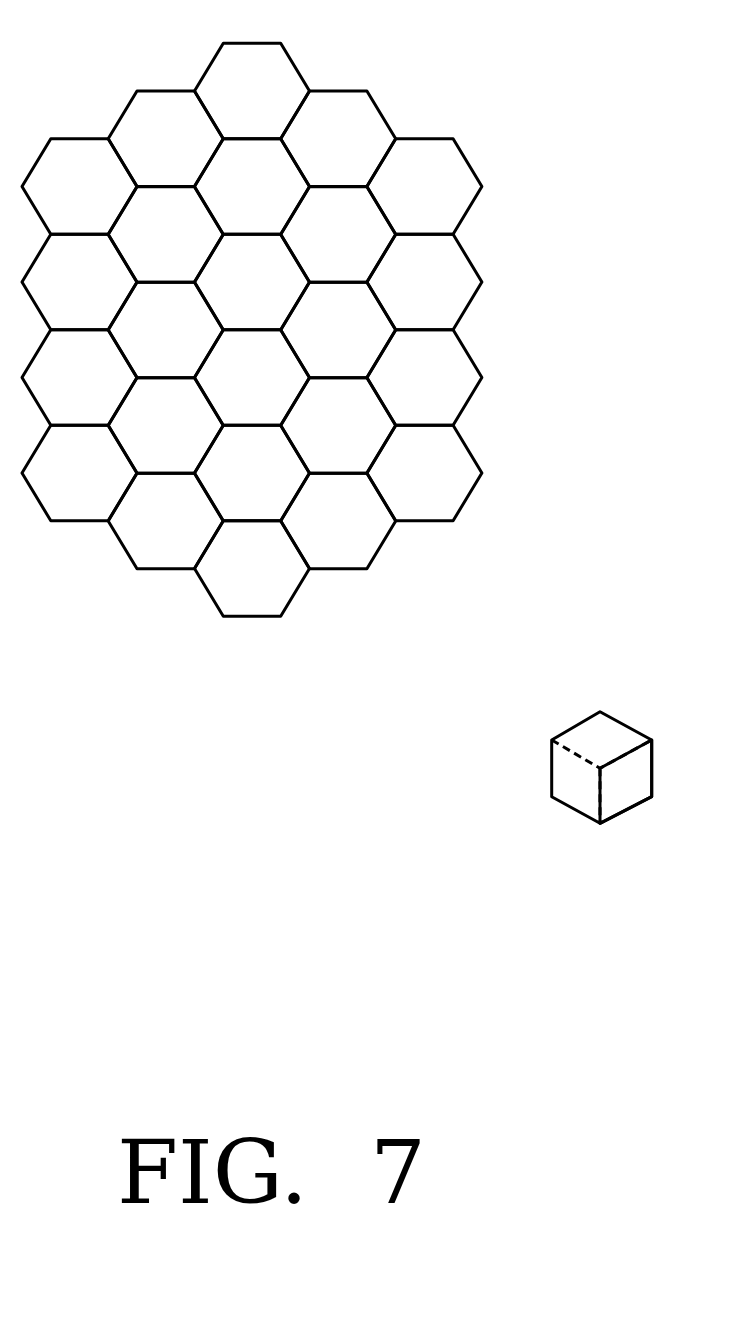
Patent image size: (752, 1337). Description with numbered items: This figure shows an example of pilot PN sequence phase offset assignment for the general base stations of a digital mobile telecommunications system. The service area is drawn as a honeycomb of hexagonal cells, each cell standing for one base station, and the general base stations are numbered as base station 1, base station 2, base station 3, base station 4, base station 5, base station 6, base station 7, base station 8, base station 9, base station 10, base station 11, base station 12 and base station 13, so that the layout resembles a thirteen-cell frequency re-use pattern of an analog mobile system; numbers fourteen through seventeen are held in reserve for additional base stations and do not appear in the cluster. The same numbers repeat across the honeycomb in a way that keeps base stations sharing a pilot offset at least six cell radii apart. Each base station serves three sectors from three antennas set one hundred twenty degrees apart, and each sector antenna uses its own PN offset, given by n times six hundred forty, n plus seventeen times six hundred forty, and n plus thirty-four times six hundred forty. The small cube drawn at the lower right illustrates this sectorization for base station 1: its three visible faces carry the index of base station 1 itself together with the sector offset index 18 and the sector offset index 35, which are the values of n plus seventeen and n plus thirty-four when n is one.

The base station 1 is at (389, 518).
The base station 2 is at (209, 306).
The base station 3 is at (208, 258).
The base station 4 is at (338, 330).
The base station 5 is at (252, 354).
The base station 6 is at (252, 306).
The base station 7 is at (295, 306).
The base station 8 is at (295, 401).
The base station 9 is at (208, 354).
The base station 10 is at (252, 329).
The base station 11 is at (165, 235).
The base station 12 is at (295, 402).
The base station 13 is at (252, 378).
The sector PN offset index n+17 18 is at (602, 768).
The sector PN offset index n+34 35 is at (626, 781).